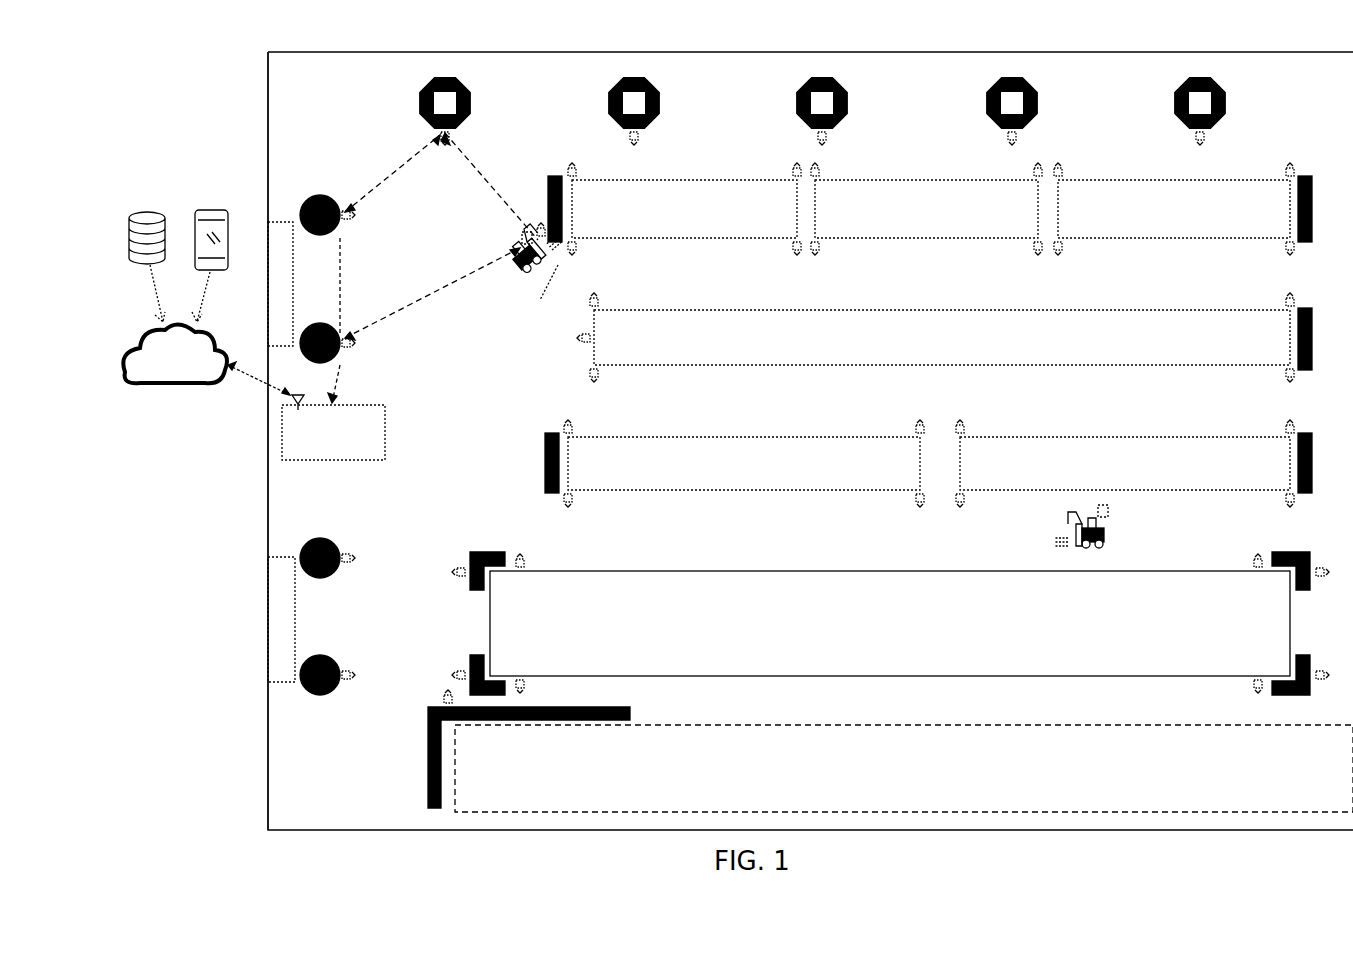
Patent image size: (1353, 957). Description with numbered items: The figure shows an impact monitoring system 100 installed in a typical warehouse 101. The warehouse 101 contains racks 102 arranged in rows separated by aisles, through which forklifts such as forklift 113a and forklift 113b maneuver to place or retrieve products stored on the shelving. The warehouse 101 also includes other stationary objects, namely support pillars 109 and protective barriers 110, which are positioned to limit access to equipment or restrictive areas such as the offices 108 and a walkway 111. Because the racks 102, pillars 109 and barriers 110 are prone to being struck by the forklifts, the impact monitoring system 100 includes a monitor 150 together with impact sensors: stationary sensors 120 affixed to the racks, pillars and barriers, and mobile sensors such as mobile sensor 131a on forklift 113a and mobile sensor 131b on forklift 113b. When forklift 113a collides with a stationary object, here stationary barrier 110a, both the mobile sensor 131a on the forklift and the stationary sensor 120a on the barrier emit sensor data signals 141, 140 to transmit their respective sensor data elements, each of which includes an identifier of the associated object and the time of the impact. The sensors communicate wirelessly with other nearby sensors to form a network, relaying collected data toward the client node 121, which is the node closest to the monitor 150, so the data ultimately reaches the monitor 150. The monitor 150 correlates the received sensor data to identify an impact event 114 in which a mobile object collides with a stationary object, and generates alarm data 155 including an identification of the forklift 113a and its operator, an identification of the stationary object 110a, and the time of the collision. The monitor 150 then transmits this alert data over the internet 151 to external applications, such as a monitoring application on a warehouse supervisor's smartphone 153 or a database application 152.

The impact monitoring system 100 is at (138, 103).
The warehouse 101 is at (268, 103).
The racks 102 is at (752, 183).
The offices 108 is at (880, 571).
The support pillars 109 is at (428, 103).
The protective barriers 110 is at (300, 203).
The stationary barrier 110a is at (563, 195).
The walkway 111 is at (950, 725).
The forklift 113a is at (512, 272).
The forklift 113b is at (1110, 545).
The impact event 114 is at (555, 265).
The stationary sensors 120 is at (832, 136).
The stationary sensor 120a is at (538, 230).
The client node 121 is at (348, 340).
The mobile sensor 131a is at (522, 236).
The mobile sensor 131b is at (1110, 508).
The sensor data signal 140 is at (478, 155).
The sensor data signal 141 is at (445, 272).
The monitor 150 is at (385, 410).
The internet 151 is at (145, 338).
The database application 152 is at (132, 212).
The smartphone 153 is at (210, 208).
The alarm data 155 is at (270, 383).